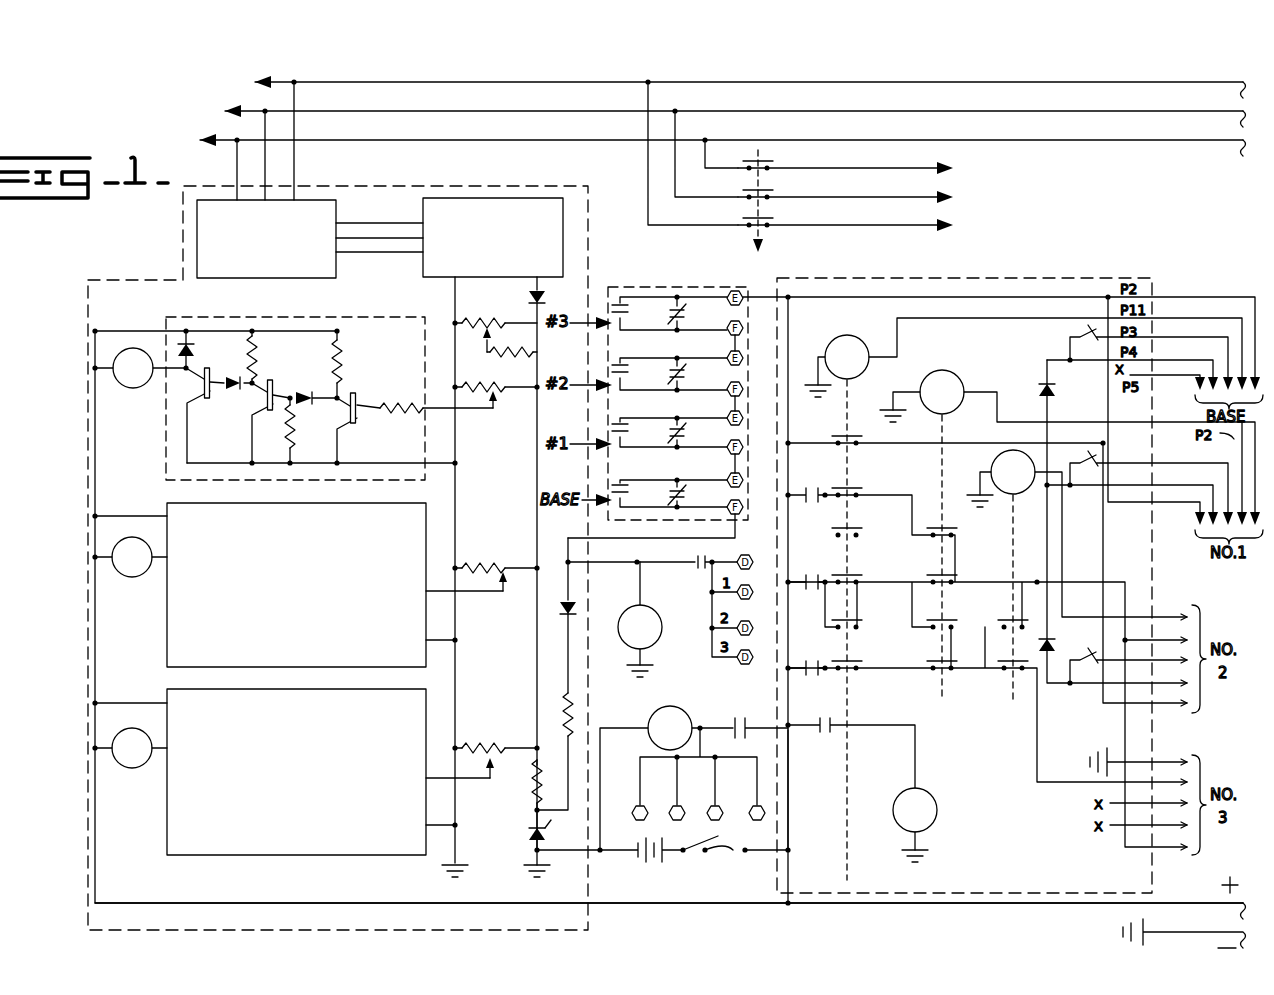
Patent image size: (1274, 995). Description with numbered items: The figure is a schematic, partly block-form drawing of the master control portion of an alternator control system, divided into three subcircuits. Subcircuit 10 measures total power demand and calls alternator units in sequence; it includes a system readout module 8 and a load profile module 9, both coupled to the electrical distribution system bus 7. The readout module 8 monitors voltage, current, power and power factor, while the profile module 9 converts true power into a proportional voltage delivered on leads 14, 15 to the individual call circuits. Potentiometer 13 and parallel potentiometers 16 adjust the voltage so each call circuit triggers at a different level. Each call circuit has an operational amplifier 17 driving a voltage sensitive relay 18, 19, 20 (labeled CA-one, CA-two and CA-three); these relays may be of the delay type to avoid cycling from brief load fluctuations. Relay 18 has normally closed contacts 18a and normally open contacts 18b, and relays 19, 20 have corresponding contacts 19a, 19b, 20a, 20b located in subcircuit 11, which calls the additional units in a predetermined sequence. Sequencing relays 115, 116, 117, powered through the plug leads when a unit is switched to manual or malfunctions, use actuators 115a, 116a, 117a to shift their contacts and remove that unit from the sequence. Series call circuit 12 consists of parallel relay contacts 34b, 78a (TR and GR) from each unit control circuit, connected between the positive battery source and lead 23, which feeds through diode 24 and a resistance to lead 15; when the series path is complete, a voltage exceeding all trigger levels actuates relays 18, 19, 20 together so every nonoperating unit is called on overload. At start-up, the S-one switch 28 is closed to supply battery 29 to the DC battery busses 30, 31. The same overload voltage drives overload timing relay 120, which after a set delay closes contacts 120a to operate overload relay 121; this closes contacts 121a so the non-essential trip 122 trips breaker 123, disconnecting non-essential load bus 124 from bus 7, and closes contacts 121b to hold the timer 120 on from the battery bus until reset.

The electrical distribution system bus 7 is at (168, 131).
The system readout module 8 is at (336, 216).
The load profile module 9 is at (423, 257).
The subcircuit 10 is at (134, 263).
The subcircuit 11 is at (980, 274).
The series call circuit 12 is at (662, 274).
The potentiometer 13 is at (494, 318).
The lead 14 is at (456, 504).
The lead 15 is at (537, 521).
The potentiometers 16 is at (505, 400).
The operational amplifier 17 is at (312, 595).
The voltage sensitive relay 18 is at (142, 387).
The voltage sensitive relay 19 is at (148, 577).
The voltage sensitive relay 20 is at (145, 767).
The lead 23 is at (570, 578).
The diode 24 is at (558, 610).
The S-1 switch 28 is at (724, 844).
The battery 29 is at (650, 858).
The DC battery bus 30 is at (846, 902).
The DC battery bus 31 is at (791, 806).
The relay contacts 34b is at (684, 296).
The relay contacts 78a is at (640, 280).
The sequencing relay 115 is at (844, 338).
The actuator 115a is at (850, 396).
The sequencing relay 116 is at (948, 374).
The actuator 116a is at (943, 436).
The sequencing relay 117 is at (992, 468).
The actuator 117a is at (1008, 535).
The normally closed contacts 18a is at (1088, 345).
The normally open contacts 18b is at (805, 503).
The contacts 19a is at (1088, 470).
The contacts 19b is at (805, 589).
The contacts 20a is at (1088, 673).
The contacts 20b is at (805, 674).
The overload timing relay 120 is at (656, 632).
The contacts 120a is at (744, 715).
The overload relay 121 is at (648, 720).
The contacts 121a is at (830, 725).
The contacts 121b is at (700, 566).
The non-essential trip 122 is at (937, 806).
The breaker 123 is at (766, 166).
The non-essential load bus 124 is at (978, 170).